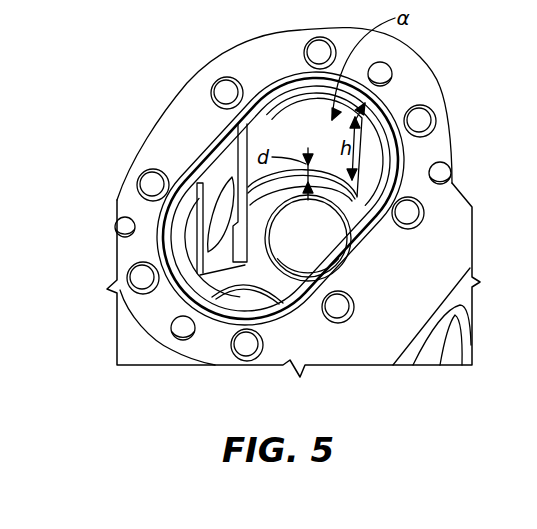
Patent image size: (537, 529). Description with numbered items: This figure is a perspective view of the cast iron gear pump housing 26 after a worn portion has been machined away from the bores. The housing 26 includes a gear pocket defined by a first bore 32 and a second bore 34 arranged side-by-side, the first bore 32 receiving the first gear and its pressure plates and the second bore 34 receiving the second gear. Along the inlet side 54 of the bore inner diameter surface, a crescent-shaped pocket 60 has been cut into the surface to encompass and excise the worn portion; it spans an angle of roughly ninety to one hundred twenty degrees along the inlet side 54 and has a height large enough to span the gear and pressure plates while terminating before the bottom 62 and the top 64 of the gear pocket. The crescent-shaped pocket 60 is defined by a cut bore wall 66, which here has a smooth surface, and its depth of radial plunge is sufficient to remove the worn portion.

The housing 26 is at (414, 83).
The first bore 32 is at (385, 183).
The second bore 34 is at (232, 303).
The inlet side 54 is at (257, 63).
The crescent-shaped pocket 60 is at (358, 80).
The bottom 62 is at (357, 237).
The top 64 is at (367, 132).
The cut bore wall 66 is at (280, 128).